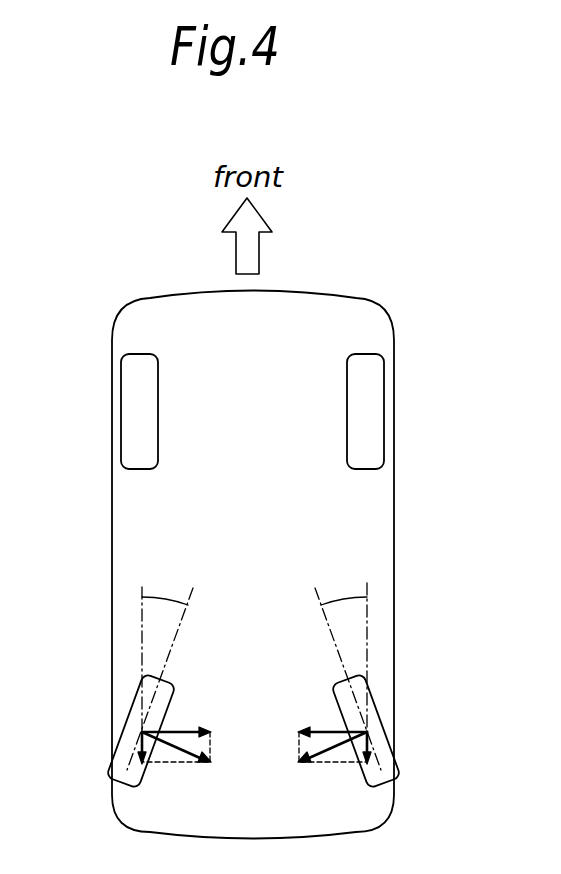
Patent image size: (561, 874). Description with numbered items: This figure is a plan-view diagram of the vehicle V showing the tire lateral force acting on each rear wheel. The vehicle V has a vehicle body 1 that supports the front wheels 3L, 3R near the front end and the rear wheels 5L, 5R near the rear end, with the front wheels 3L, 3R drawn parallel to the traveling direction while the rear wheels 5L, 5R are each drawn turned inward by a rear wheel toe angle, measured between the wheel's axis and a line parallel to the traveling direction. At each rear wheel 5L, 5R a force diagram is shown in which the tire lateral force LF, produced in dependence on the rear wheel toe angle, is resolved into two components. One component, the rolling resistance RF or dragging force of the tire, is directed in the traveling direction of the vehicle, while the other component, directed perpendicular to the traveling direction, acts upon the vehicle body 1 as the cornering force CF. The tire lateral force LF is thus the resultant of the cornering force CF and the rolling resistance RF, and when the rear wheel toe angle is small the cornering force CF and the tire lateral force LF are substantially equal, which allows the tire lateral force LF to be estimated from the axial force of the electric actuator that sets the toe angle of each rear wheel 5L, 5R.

The vehicle body 1 is at (318, 296).
The vehicle V is at (388, 248).
The left front wheel 3L is at (128, 419).
The right front wheel 3R is at (383, 400).
The left rear wheel 5L is at (132, 765).
The right rear wheel 5R is at (377, 767).
The cornering force CF is at (178, 728).
The rolling resistance RF is at (140, 743).
The tire lateral force LF is at (178, 755).